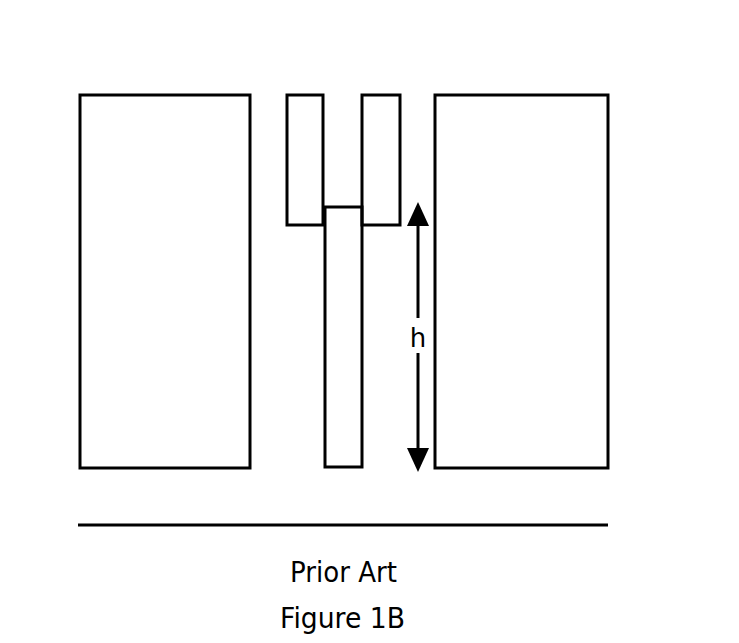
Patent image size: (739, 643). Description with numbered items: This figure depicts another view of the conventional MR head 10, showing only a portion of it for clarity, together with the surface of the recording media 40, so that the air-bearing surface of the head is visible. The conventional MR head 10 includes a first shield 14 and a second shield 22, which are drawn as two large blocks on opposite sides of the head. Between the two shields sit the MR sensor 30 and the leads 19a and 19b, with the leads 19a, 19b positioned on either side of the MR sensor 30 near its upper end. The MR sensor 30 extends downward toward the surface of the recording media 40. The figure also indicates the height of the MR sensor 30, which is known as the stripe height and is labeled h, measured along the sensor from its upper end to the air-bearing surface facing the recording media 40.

The conventional MR head 10 is at (329, 35).
The first shield 14 is at (80, 132).
The lead 19a is at (307, 95).
The lead 19b is at (380, 92).
The second shield 22 is at (608, 130).
The MR sensor 30 is at (343, 470).
The recording media 40 is at (567, 523).